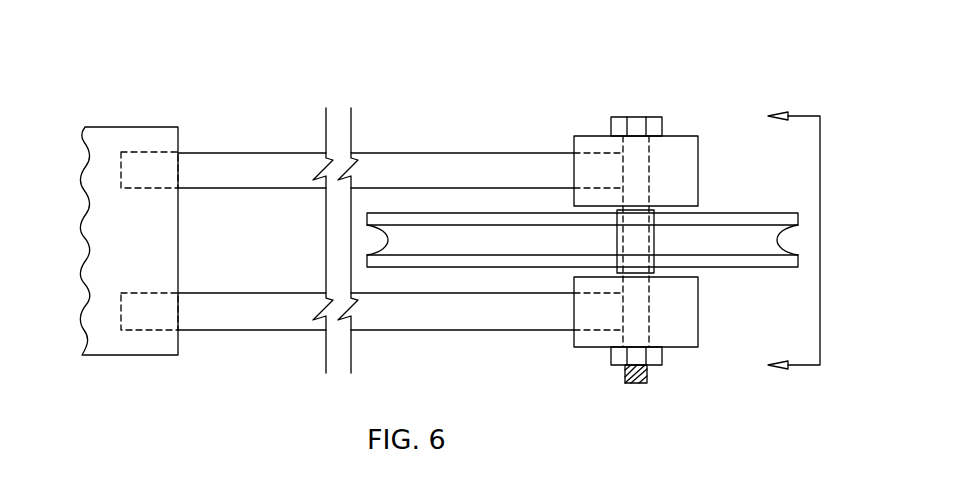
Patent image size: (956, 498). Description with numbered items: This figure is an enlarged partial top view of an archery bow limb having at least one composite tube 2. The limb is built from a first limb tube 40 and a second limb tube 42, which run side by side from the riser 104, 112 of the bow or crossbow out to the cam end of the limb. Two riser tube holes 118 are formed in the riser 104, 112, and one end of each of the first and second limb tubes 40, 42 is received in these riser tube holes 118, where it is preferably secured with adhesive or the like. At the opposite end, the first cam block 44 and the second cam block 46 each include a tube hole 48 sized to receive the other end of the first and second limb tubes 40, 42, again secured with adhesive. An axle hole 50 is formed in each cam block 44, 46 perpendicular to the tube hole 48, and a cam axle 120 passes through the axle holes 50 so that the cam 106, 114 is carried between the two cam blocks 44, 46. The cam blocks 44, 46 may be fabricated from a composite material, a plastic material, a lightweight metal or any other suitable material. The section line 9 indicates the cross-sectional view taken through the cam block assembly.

The archery bow limb having at least one composite tube 2 is at (365, 388).
The section line 9 is at (794, 246).
The first limb tube 40 is at (383, 150).
The second limb tube 42 is at (400, 330).
The first cam block 44 is at (698, 193).
The second cam block 46 is at (685, 348).
The tube hole 48 is at (590, 150).
The axle hole 50 is at (650, 166).
The riser 104 is at (115, 283).
The riser 112 is at (113, 355).
The cam 106 is at (588, 263).
The cam 114 is at (737, 268).
The riser tube hole 118 is at (150, 150).
The cam axle 120 is at (632, 118).